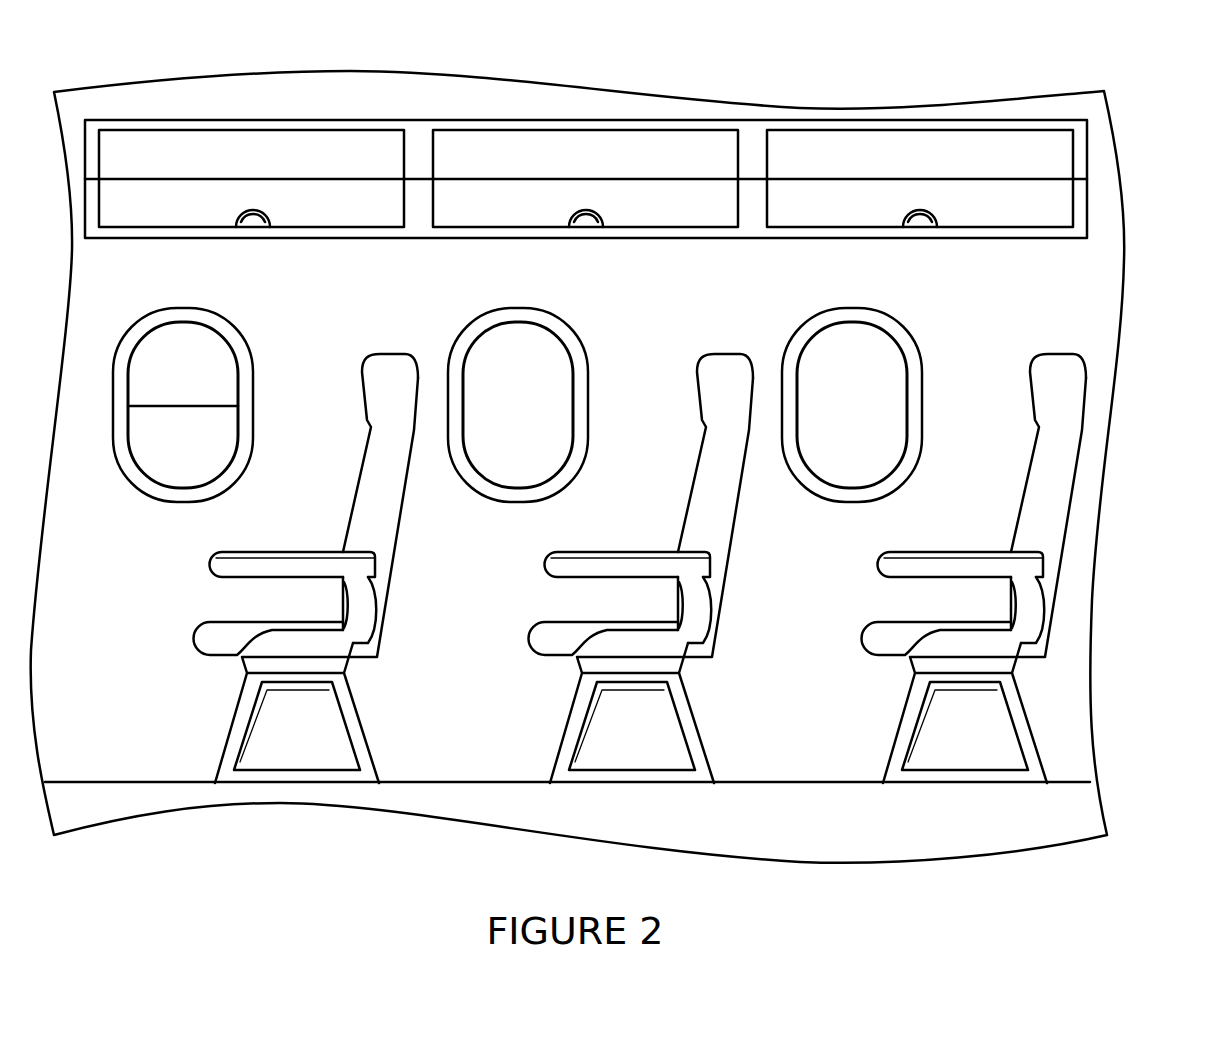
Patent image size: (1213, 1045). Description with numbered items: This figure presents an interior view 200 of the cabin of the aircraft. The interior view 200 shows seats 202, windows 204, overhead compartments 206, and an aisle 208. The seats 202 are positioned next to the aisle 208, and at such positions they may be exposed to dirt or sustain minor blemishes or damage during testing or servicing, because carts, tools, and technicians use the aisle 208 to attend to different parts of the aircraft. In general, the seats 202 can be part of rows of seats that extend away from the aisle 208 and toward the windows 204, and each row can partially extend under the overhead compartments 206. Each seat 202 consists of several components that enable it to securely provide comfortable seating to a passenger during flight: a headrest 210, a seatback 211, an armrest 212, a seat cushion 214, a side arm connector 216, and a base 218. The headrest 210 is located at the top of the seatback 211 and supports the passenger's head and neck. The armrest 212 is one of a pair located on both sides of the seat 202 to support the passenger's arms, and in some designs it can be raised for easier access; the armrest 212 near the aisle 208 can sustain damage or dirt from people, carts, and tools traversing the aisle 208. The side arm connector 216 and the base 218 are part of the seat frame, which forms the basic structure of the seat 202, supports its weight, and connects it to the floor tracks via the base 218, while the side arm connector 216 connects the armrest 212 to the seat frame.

The interior view 200 is at (1135, 240).
The seat 202 is at (612, 531).
The window 204 is at (253, 365).
The overhead compartment 206 is at (328, 130).
The aisle 208 is at (163, 795).
The headrest 210 is at (378, 415).
The seatback 211 is at (420, 465).
The armrest 212 is at (252, 550).
The seat cushion 214 is at (207, 628).
The side arm connector 216 is at (365, 617).
The base 218 is at (360, 712).